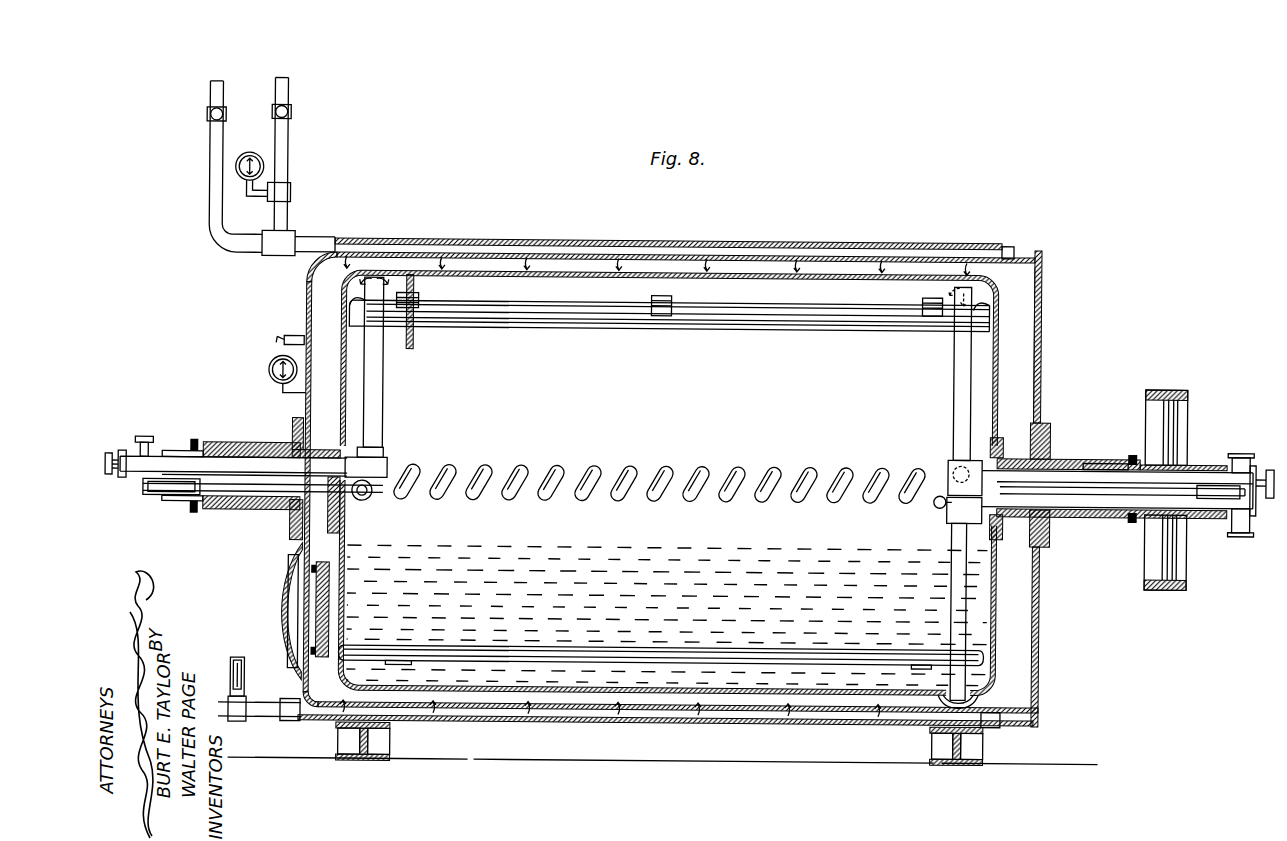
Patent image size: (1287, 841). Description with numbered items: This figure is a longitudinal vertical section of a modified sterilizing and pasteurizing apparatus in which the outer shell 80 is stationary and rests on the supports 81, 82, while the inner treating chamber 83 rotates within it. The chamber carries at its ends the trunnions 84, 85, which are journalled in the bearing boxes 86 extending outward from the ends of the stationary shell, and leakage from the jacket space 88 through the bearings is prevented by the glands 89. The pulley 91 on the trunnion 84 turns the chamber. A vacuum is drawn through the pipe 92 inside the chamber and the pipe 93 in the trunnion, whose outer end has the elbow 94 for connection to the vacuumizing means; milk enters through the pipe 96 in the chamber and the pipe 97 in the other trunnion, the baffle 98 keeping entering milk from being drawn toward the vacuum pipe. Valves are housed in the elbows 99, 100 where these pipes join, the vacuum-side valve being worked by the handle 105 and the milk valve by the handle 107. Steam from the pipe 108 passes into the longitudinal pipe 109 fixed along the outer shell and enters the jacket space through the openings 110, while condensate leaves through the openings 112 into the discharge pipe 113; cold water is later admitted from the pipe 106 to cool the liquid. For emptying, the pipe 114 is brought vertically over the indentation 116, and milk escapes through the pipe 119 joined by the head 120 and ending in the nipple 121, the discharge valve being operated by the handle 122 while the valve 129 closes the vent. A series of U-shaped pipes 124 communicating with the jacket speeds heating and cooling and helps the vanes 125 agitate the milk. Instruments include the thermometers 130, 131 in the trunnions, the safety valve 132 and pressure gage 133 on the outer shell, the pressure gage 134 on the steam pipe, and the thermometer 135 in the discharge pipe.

The outer shell 80 is at (1041, 309).
The support 81 is at (975, 740).
The support 82 is at (384, 741).
The treating chamber 83 is at (997, 352).
The trunnion 84 is at (1023, 518).
The trunnion 85 is at (318, 450).
The bearing boxes 86 is at (237, 443).
The jacket space 88 is at (1020, 294).
The glands 89 is at (195, 444).
The pulley 91 is at (1170, 383).
The pipe 92 is at (958, 396).
The pipe 93 is at (1183, 474).
The elbow 94 is at (1240, 460).
The pipe 96 is at (376, 371).
The pipe 97 is at (170, 460).
The baffle 98 is at (412, 346).
The elbow 99 is at (385, 460).
The elbow 100 is at (950, 466).
The handle 105 is at (1268, 466).
The pipe 106 is at (210, 237).
The handle 107 is at (108, 454).
The pipe 108 is at (285, 217).
The longitudinal pipe 109 is at (655, 240).
The openings 110 is at (556, 240).
The openings 112 is at (505, 718).
The discharge pipe 113 is at (612, 722).
The pipe 114 is at (958, 537).
The indentation 116 is at (968, 698).
The pipe 119 is at (1125, 496).
The head 120 is at (947, 507).
The nipple 121 is at (1243, 528).
The handle 122 is at (1266, 500).
The U-shaped pipes 124 is at (634, 461).
The vanes 125 is at (775, 318).
The valve 129 is at (940, 495).
The thermometer 130 is at (1218, 492).
The thermometer 131 is at (158, 488).
The safety valve 132 is at (283, 338).
The pressure gage 133 is at (268, 370).
The pressure gage 134 is at (252, 153).
The thermometer 135 is at (240, 672).